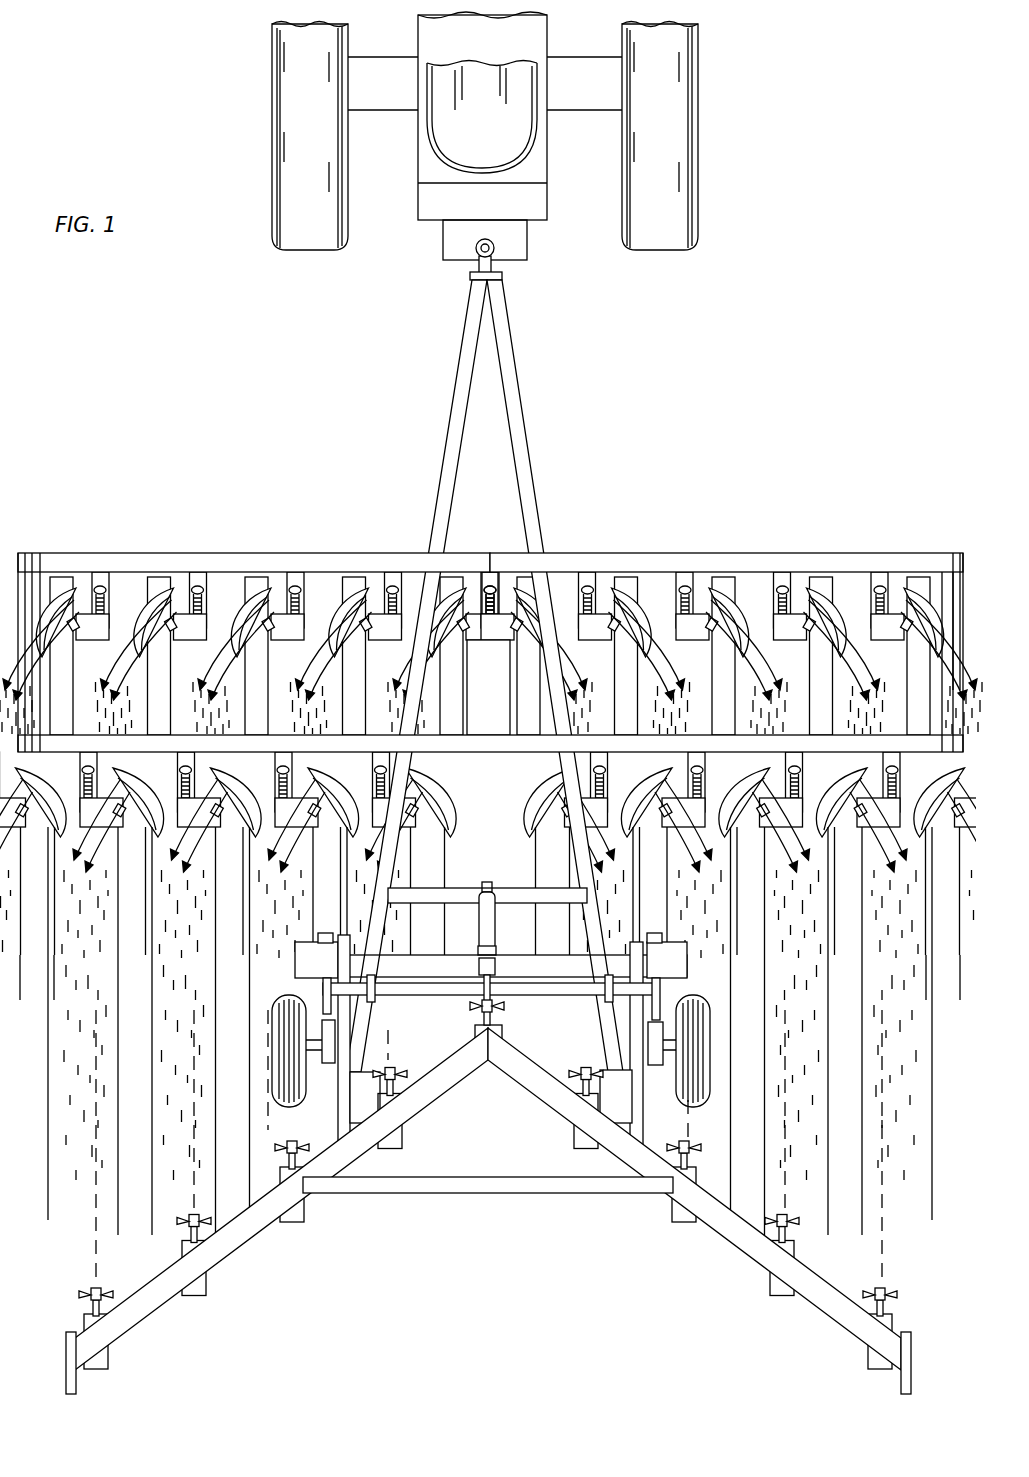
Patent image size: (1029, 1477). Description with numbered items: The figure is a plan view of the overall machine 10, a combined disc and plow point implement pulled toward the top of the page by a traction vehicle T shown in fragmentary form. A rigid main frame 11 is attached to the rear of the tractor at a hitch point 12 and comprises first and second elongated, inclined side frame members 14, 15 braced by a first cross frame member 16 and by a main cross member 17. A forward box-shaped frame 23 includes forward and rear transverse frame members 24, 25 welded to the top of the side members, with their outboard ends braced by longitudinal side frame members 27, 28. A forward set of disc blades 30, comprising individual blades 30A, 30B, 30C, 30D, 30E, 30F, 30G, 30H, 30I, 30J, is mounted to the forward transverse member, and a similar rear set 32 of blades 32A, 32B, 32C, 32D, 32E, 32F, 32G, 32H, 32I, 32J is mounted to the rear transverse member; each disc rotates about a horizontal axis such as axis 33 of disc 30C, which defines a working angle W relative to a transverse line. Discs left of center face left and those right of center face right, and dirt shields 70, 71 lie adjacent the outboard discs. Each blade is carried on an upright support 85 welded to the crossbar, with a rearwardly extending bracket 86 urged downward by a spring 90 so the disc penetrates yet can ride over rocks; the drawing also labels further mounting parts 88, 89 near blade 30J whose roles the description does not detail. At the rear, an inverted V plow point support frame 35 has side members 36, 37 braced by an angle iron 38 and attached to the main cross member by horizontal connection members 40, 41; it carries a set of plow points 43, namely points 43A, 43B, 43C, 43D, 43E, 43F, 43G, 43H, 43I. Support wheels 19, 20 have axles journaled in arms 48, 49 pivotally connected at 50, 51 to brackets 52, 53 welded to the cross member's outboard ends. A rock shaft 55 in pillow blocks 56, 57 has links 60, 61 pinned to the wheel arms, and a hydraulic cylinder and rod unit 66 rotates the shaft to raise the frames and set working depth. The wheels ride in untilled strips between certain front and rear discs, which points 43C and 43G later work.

The traction vehicle T is at (553, 176).
The overall machine 10 is at (583, 532).
The rigid frame 11 is at (438, 498).
The hitch point 12 is at (458, 270).
The first side frame member 14 is at (446, 378).
The second side frame member 15 is at (517, 380).
The first cross frame member 16 is at (452, 888).
The main cross member 17 is at (538, 948).
The support wheel 19 is at (268, 1032).
The support wheel 20 is at (712, 1028).
The forward box-shaped frame 23 is at (258, 553).
The forward transverse frame member 24 is at (698, 553).
The rear transverse frame member 25 is at (725, 735).
The longitudinal side frame member 27 is at (945, 672).
The longitudinal side frame member 28 is at (60, 580).
The forward set of disc blades 30 is at (60, 560).
The disc blade 30A is at (58, 645).
The disc blade 30B is at (160, 628).
The disc blade 30C is at (239, 653).
The disc blade 30D is at (340, 640).
The disc blade 30E is at (445, 645).
The disc blade 30F is at (520, 655).
The disc blade 30G is at (625, 635).
The disc blade 30H is at (725, 635).
The disc blade 30I is at (825, 635).
The disc blade 30J is at (925, 640).
The rear set of disc blades 32 is at (40, 840).
The disc blade 32A is at (40, 830).
The disc blade 32B is at (130, 805).
The disc blade 32C is at (226, 805).
The disc blade 32D is at (326, 805).
The disc blade 32E is at (430, 808).
The disc blade 32F is at (550, 805).
The disc blade 32G is at (655, 805).
The disc blade 32H is at (745, 810).
The disc blade 32I is at (846, 810).
The disc blade 32J is at (942, 810).
The horizontal axis 33 is at (255, 626).
The working angle W is at (222, 627).
The plow point support frame 35 is at (726, 1258).
The first side member 36 is at (250, 1248).
The second side member 37 is at (828, 1312).
The angle iron 38 is at (458, 1193).
The connection member 40 is at (340, 1098).
The connection member 41 is at (645, 1080).
The set of plow points 43 is at (78, 1297).
The plow point 43A is at (104, 1290).
The plow point 43B is at (202, 1218).
The plow point 43C is at (282, 1147).
The plow point 43D is at (398, 1072).
The plow point 43E is at (500, 1008).
The plow point 43F is at (578, 1072).
The plow point 43G is at (700, 1145).
The plow point 43H is at (794, 1218).
The plow point 43I is at (888, 1290).
The wheel support arm 48 is at (322, 985).
The wheel support arm 49 is at (662, 985).
The pivotal connection 50 is at (305, 940).
The pivotal connection 51 is at (668, 935).
The bracket 52 is at (294, 952).
The bracket 53 is at (686, 945).
The rock shaft 55 is at (422, 985).
The pillow block 56 is at (376, 995).
The pillow block 57 is at (604, 995).
The first link 60 is at (320, 1012).
The second link 61 is at (664, 1000).
The hydraulic cylinder and rod unit 66 is at (478, 922).
The dirt shield 70 is at (10, 580).
The dirt shield 71 is at (962, 553).
The upright support 85 is at (882, 575).
The bracket 86 is at (850, 595).
The disc hub 88 is at (873, 628).
The spindle 89 is at (883, 636).
The spring 90 is at (892, 598).